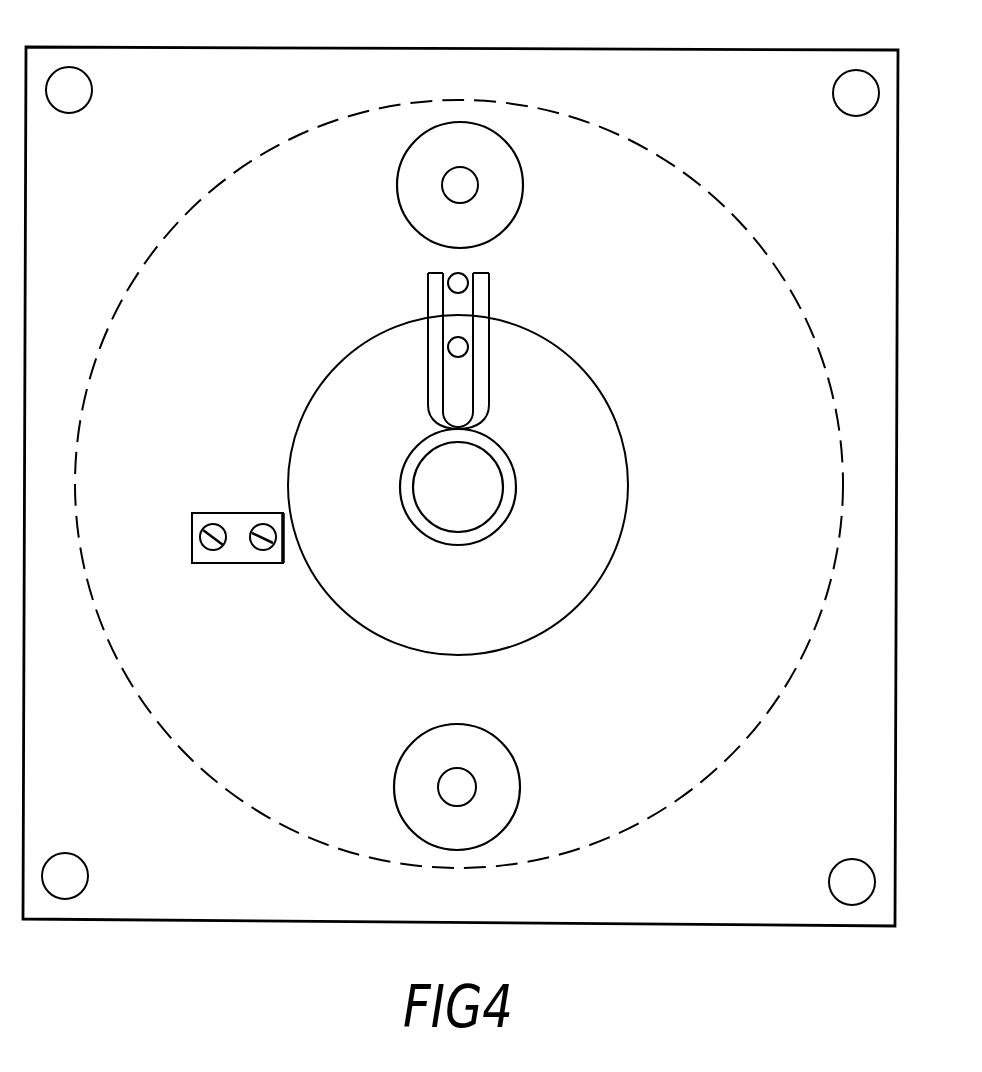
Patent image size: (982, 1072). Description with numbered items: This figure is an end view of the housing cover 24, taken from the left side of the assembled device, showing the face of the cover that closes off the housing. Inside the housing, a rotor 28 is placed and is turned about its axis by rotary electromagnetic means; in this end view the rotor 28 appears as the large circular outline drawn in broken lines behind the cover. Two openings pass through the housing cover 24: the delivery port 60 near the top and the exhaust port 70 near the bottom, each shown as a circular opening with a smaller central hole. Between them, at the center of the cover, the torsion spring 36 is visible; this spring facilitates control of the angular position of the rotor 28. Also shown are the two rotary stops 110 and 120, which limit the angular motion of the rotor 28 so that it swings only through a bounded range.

The housing cover 24 is at (636, 58).
The rotor 28 is at (192, 243).
The torsion spring 36 is at (416, 452).
The delivery port 60 is at (410, 201).
The exhaust port 70 is at (406, 765).
The rotary stop 110 is at (207, 515).
The rotary stop 120 is at (468, 284).